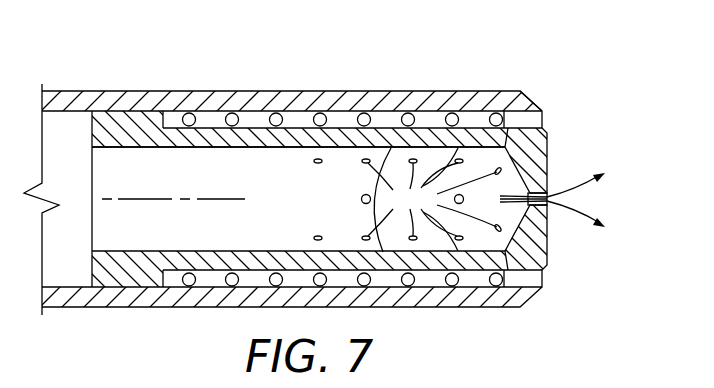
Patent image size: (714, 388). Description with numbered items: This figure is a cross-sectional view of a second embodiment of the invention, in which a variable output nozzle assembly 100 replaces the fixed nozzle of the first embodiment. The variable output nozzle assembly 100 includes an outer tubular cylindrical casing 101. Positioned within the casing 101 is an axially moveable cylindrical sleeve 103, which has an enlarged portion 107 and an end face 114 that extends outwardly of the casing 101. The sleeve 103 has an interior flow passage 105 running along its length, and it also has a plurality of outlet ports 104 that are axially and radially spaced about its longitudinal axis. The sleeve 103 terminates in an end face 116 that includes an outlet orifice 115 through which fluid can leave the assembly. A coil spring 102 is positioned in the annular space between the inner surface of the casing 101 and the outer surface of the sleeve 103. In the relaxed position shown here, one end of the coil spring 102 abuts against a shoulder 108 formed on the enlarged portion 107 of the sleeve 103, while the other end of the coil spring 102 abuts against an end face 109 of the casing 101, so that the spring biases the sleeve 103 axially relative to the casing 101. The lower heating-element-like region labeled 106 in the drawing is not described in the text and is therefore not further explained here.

The variable output nozzle assembly 100 is at (312, 76).
The outer tubular cylindrical casing 101 is at (217, 307).
The coil spring 102 is at (408, 117).
The axially moveable cylindrical sleeve 103 is at (230, 147).
The outlet ports 104 is at (451, 202).
The interior flow passage 105 is at (207, 228).
The lower heating element 106 is at (471, 278).
The enlarged portion 107 is at (127, 130).
The shoulder 108 is at (167, 121).
The end face of the casing 109 is at (535, 102).
The end face 114 is at (547, 242).
The outlet orifice 115 is at (547, 199).
The end face 116 is at (517, 167).